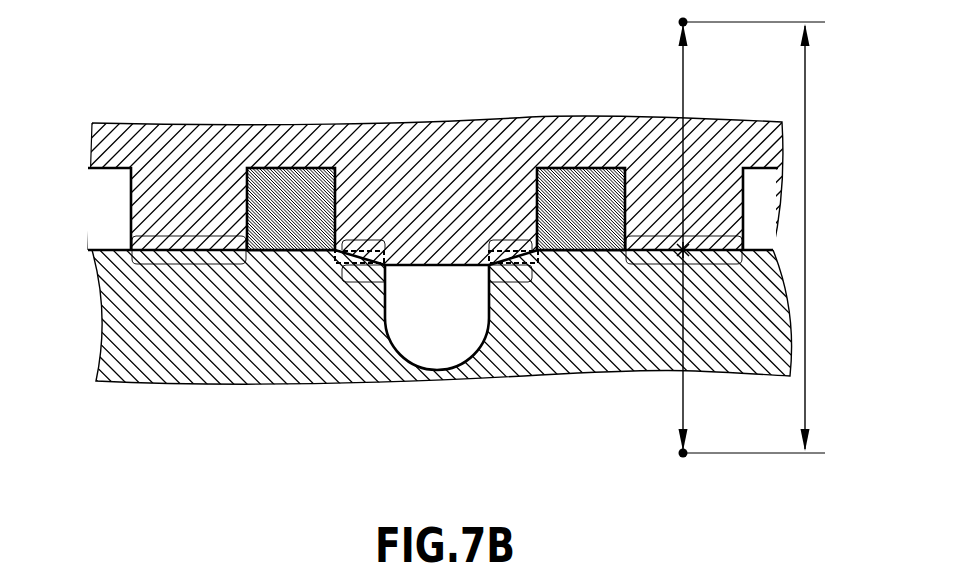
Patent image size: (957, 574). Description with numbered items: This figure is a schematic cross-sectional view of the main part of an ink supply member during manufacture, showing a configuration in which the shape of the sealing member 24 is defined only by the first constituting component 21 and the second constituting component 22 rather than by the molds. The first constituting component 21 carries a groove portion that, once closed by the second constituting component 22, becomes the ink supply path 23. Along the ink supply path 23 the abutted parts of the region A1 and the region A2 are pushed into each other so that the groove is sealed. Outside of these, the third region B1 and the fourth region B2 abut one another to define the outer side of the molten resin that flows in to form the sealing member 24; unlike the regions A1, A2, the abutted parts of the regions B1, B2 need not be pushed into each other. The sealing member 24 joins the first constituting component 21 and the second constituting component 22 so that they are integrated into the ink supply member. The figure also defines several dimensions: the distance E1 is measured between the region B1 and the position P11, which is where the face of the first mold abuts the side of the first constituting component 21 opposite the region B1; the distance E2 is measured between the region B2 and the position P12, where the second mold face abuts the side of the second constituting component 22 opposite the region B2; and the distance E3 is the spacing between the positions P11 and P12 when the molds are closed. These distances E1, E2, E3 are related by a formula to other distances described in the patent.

The first constituting component 21 is at (172, 378).
The second constituting component 22 is at (430, 122).
The ink supply path 23 is at (438, 346).
The sealing member 24 is at (590, 168).
The region A1 is at (385, 245).
The region A2 is at (374, 272).
The third region B1 is at (192, 236).
The fourth region B2 is at (192, 264).
The distance E1 is at (684, 398).
The distance E2 is at (684, 86).
The distance E3 is at (806, 228).
The position P11 is at (730, 462).
The position P12 is at (730, 14).